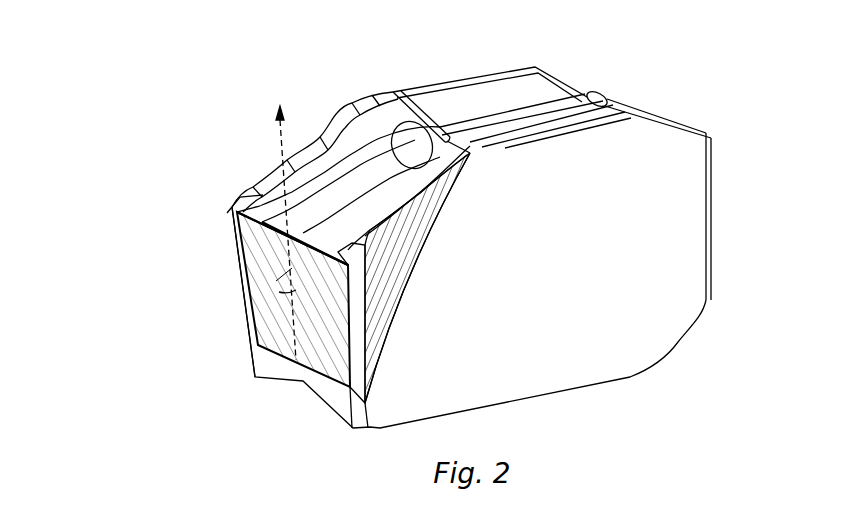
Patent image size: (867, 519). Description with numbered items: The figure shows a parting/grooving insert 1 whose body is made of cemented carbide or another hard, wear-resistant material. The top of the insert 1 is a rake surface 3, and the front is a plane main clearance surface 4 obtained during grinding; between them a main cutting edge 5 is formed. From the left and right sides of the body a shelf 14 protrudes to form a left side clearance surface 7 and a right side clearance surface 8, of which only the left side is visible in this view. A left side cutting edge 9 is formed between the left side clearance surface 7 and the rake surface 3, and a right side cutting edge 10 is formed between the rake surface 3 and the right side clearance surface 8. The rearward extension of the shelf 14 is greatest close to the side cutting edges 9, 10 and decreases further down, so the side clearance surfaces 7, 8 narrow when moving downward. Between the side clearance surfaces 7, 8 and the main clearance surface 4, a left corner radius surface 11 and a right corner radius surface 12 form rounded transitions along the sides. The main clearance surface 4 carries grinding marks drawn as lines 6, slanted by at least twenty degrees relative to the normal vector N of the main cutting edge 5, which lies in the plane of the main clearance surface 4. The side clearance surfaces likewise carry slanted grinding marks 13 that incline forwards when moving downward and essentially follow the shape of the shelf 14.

The cutting insert 1 is at (678, 107).
The rake surface 3 is at (284, 220).
The main clearance surface 4 is at (265, 267).
The main cutting edge 5 is at (272, 228).
The grinding marks 6 is at (276, 281).
The left side clearance surface 7 is at (392, 300).
The right side clearance surface 8 is at (229, 191).
The left side cutting edge 9 is at (395, 240).
The right side cutting edge 10 is at (296, 222).
The left corner radius surface 11 is at (359, 362).
The right corner radius surface 12 is at (233, 242).
The grinding marks 13 is at (443, 219).
The shelf 14 is at (428, 290).